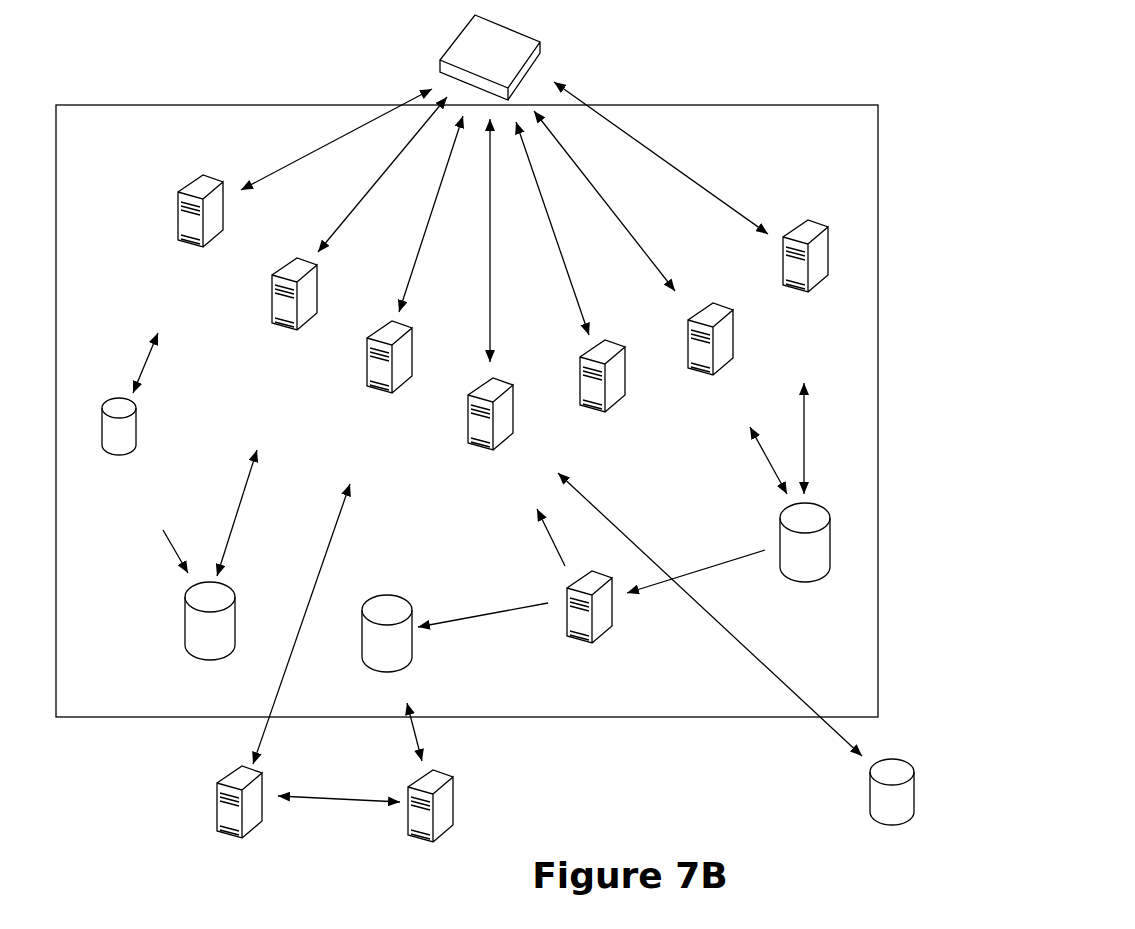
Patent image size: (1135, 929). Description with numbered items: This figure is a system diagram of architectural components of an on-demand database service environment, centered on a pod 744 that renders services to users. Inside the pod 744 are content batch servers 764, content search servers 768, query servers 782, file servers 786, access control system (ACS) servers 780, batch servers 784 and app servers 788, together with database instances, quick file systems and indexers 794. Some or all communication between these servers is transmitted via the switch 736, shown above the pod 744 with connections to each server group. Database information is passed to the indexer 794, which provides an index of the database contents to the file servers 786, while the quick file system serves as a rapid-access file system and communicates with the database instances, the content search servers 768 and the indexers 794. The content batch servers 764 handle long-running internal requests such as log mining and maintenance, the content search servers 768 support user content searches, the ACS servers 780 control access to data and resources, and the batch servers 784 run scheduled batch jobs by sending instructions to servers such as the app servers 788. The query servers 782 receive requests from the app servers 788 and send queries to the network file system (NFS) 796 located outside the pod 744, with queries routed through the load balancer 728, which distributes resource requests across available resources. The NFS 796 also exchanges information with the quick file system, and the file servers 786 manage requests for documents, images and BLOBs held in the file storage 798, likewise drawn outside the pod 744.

The switch 736 is at (541, 44).
The pod 744 is at (680, 104).
The content batch servers 764 is at (203, 178).
The content search servers 768 is at (315, 265).
The query servers 782 is at (409, 330).
The file servers 786 is at (501, 385).
The access control system (ACS) servers 780 is at (605, 348).
The batch servers 784 is at (700, 306).
The app servers 788 is at (826, 230).
The indexers 794 is at (611, 626).
The load balancer 728 is at (216, 782).
The network file system (NFS) 796 is at (452, 802).
The file storage 798 is at (869, 797).